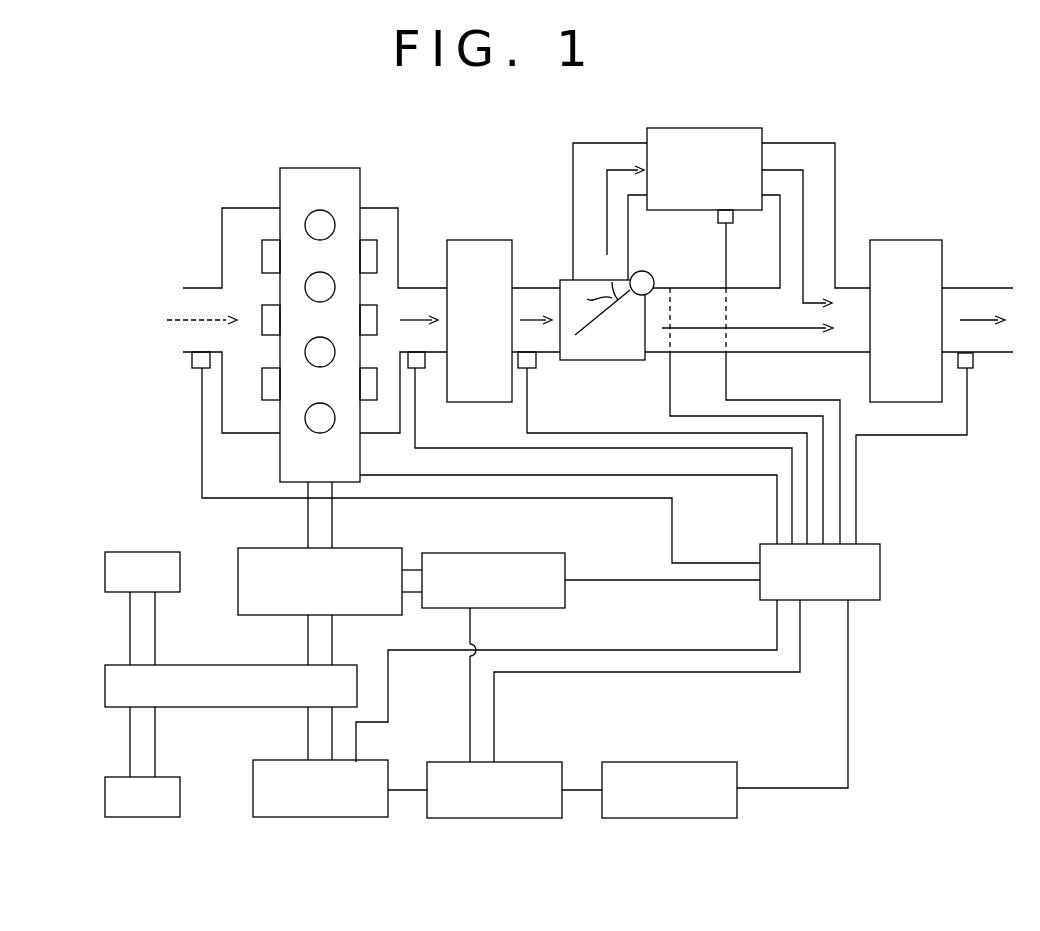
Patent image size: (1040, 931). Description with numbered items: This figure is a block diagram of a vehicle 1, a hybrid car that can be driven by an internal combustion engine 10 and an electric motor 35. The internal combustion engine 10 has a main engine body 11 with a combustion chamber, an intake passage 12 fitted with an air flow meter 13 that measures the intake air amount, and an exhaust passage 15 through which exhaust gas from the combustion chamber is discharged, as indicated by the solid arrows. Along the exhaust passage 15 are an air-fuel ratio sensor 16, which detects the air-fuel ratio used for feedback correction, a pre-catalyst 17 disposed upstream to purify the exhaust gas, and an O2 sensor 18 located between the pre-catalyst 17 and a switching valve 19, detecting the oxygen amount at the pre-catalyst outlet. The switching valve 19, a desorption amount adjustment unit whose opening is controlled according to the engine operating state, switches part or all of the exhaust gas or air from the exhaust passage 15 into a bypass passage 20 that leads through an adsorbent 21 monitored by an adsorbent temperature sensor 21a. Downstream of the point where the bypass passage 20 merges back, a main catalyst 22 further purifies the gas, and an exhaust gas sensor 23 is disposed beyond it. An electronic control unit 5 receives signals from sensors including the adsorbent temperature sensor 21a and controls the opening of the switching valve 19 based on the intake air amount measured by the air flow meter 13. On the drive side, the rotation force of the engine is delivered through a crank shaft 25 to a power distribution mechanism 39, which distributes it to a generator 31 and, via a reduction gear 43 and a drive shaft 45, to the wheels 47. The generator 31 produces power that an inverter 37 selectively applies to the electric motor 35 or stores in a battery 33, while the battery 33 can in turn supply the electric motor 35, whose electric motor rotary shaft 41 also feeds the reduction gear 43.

The vehicle 1 is at (928, 712).
The electronic control unit 5 is at (880, 544).
The internal combustion engine 10 is at (232, 145).
The main engine body 11 is at (357, 168).
The intake passage 12 is at (222, 230).
The air flow meter 13 is at (197, 370).
The exhaust passage 15 is at (400, 243).
The air-fuel ratio sensor 16 is at (418, 368).
The pre-catalyst 17 is at (487, 240).
The O2 sensor 18 is at (527, 370).
The switching valve 19 is at (613, 360).
The bypass passage 20 is at (573, 170).
The adsorbent 21 is at (760, 122).
The adsorbent temperature sensor 21a is at (720, 223).
The main catalyst 22 is at (928, 240).
The exhaust gas sensor 23 is at (973, 370).
The crank shaft 25 is at (307, 546).
The generator 31 is at (558, 553).
The battery 33 is at (732, 762).
The electric motor 35 is at (402, 752).
The inverter 37 is at (553, 761).
The power distribution mechanism 39 is at (382, 548).
The electric motor rotary shaft 41 is at (337, 635).
The reduction gear 43 is at (105, 665).
The drive shaft 45 is at (156, 644).
The wheel 47 is at (170, 552).